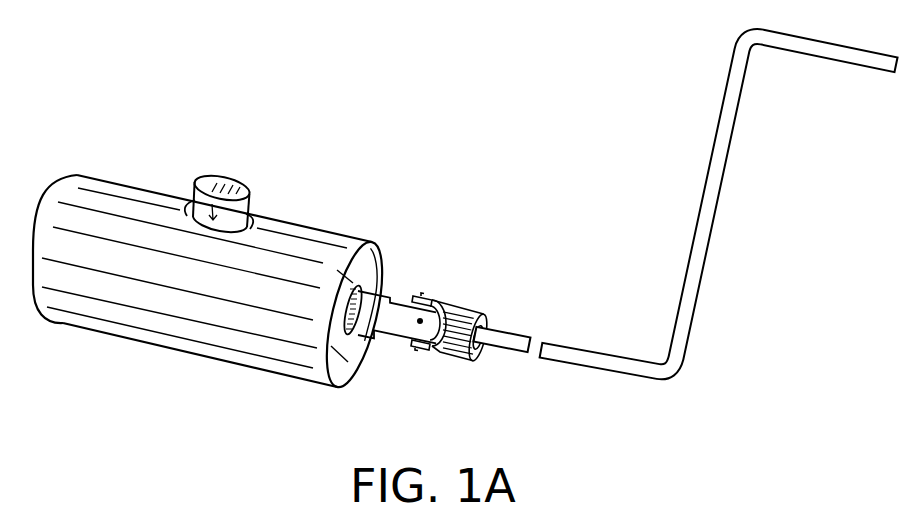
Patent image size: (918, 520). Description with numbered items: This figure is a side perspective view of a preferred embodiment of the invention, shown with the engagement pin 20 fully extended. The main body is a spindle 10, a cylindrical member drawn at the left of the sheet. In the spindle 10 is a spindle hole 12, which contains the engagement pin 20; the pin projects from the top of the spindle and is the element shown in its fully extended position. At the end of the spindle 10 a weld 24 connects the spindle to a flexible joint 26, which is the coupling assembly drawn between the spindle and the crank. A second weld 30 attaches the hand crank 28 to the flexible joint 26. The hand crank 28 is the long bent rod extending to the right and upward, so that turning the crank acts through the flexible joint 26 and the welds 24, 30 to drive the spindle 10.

The spindle 10 is at (307, 227).
The spindle hole 12 is at (250, 213).
The engagement pin 20 is at (200, 202).
The weld 24 is at (383, 275).
The flexible joint 26 is at (398, 264).
The hand crank 28 is at (702, 200).
The weld 30 is at (478, 337).